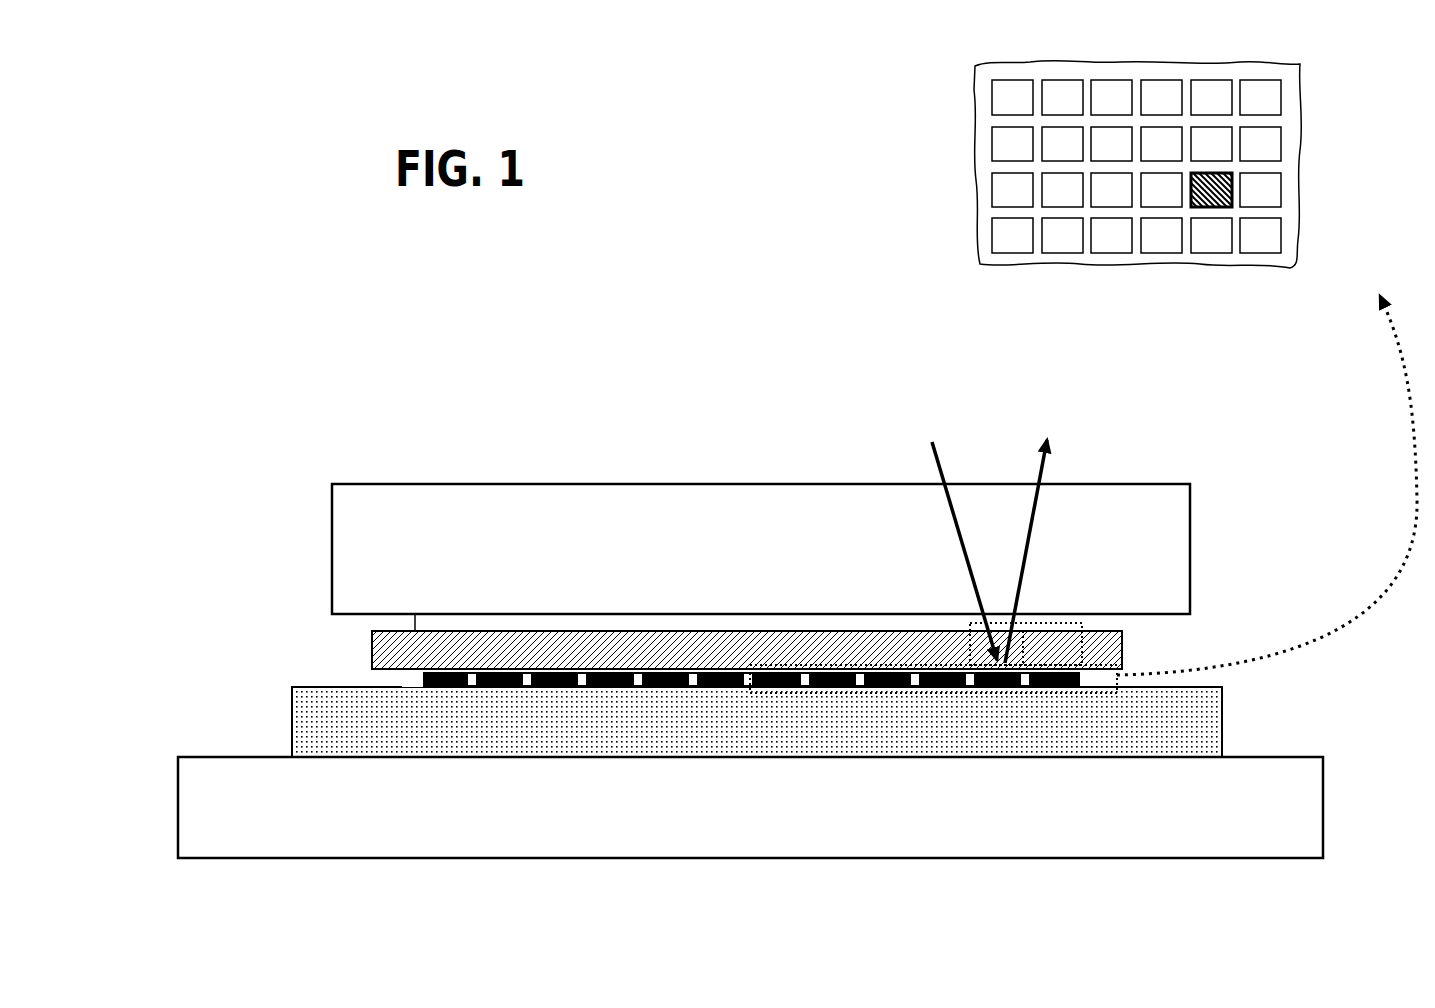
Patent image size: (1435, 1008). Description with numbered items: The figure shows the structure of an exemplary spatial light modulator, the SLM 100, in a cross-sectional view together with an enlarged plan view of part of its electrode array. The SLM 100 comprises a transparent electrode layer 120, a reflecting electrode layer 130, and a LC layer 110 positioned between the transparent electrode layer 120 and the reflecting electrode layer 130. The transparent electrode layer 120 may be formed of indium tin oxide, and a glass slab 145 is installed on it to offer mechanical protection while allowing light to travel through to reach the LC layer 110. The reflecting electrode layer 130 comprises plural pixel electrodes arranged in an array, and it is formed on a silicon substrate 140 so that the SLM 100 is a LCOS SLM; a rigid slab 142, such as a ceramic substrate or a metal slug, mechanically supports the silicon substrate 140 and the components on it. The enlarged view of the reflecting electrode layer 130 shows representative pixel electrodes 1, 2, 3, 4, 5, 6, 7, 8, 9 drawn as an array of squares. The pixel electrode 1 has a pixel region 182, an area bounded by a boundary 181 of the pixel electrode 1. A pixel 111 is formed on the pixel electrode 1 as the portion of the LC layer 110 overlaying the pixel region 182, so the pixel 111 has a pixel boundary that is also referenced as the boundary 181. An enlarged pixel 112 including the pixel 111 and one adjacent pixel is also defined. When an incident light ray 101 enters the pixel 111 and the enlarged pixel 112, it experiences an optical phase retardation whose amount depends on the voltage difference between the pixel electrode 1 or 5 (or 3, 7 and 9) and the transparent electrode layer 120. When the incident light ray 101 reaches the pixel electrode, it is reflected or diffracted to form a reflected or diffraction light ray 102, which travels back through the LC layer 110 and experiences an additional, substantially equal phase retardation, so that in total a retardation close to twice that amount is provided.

The SLM 100 is at (192, 384).
The glass slab 145 is at (761, 549).
The transparent electrode layer 120 is at (433, 622).
The LC layer 110 is at (747, 650).
The pixel 111 is at (1023, 652).
The enlarged pixel 112 is at (1060, 623).
The reflecting electrode layer 130 is at (410, 679).
The silicon substrate 140 is at (757, 722).
The rigid slab 142 is at (750, 807).
The incident light ray 101 is at (955, 533).
The reflected or diffraction light ray 102 is at (1025, 558).
The pixel electrode 1 is at (1229, 212).
The boundary 181 is at (1190, 207).
The pixel region 182 is at (1232, 182).
The pixel electrode 2 is at (1161, 144).
The pixel electrode 3 is at (1211, 144).
The pixel electrode 4 is at (1260, 144).
The pixel electrode 5 is at (1260, 190).
The pixel electrode 6 is at (1260, 235).
The pixel electrode 7 is at (1211, 235).
The pixel electrode 8 is at (1161, 235).
The pixel electrode 9 is at (1161, 190).